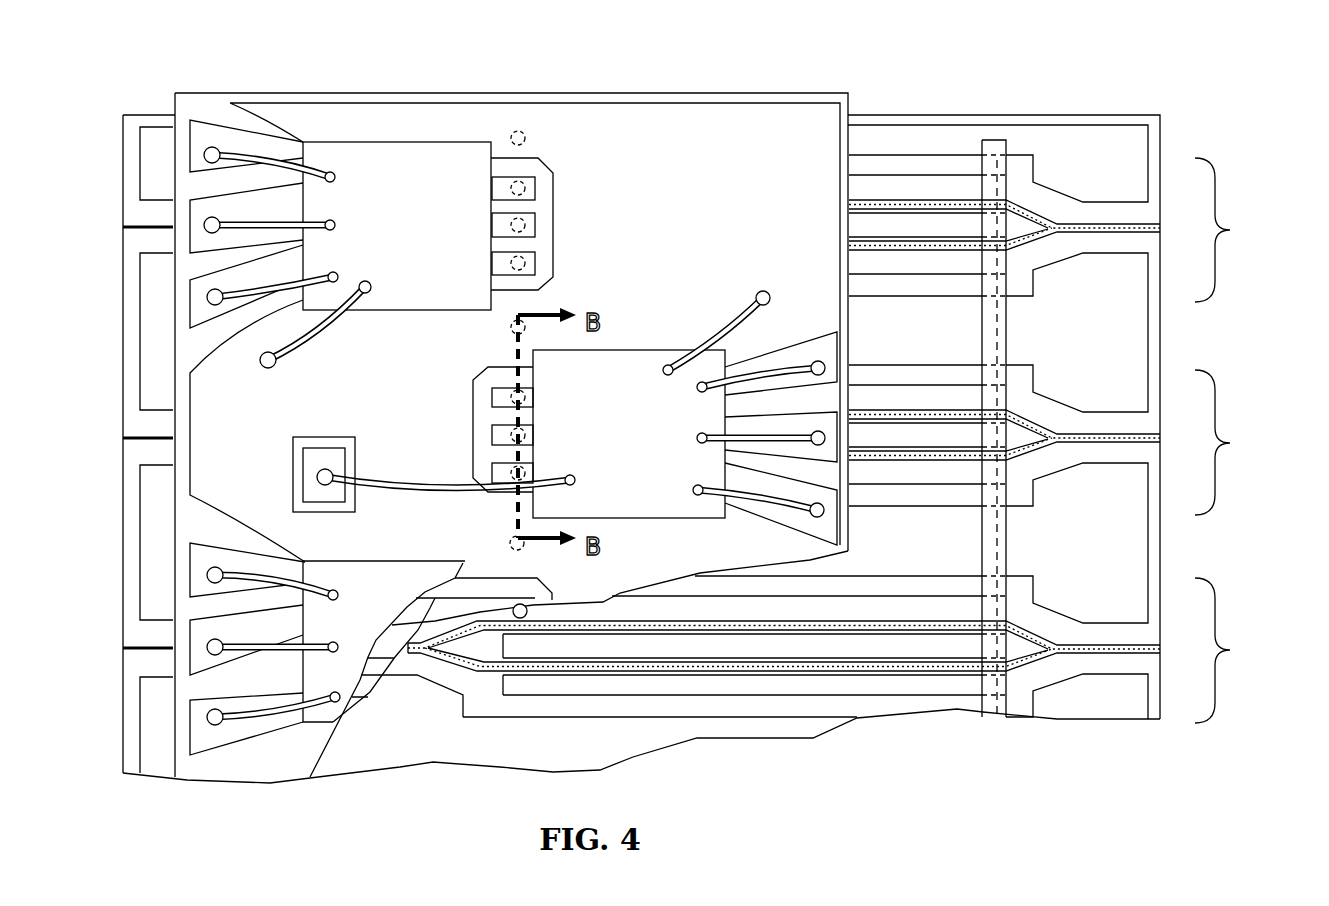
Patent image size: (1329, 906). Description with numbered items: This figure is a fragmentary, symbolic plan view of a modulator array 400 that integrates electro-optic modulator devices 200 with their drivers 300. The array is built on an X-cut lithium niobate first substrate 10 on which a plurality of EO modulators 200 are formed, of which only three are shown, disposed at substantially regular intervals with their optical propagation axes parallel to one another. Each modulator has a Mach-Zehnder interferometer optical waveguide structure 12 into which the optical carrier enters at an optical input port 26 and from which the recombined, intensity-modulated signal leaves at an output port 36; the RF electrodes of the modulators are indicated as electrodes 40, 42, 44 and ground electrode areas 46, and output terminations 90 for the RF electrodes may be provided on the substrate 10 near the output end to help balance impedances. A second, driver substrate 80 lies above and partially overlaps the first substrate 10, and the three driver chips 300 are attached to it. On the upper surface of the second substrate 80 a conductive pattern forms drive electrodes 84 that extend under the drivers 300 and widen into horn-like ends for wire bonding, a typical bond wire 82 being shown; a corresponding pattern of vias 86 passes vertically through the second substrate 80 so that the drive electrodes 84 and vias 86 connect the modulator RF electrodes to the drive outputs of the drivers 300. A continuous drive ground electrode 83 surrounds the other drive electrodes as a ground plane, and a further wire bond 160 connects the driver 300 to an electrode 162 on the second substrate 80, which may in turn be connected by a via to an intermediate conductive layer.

The first substrate 10 is at (1085, 115).
The Mach-Zehnder interferometer optical waveguide structure 12 is at (1033, 417).
The optical input port 26 is at (120, 430).
The output port 36 is at (1160, 437).
The electrode 40 is at (875, 398).
The electrode 42 is at (878, 475).
The electrode 44 is at (917, 435).
The ground electrode area 46 is at (1107, 477).
The second substrate 80 is at (655, 93).
The bond wire 82 is at (710, 397).
The drive ground electrode 83 is at (778, 145).
The drive electrodes 84 is at (773, 303).
The vias 86 is at (510, 328).
The output terminations 90 is at (998, 323).
The wire bond 160 is at (430, 490).
The electrode 162 is at (313, 452).
The EO modulator devices 200 is at (1244, 440).
The drivers 300 is at (415, 160).
The modulator array 400 is at (1190, 128).